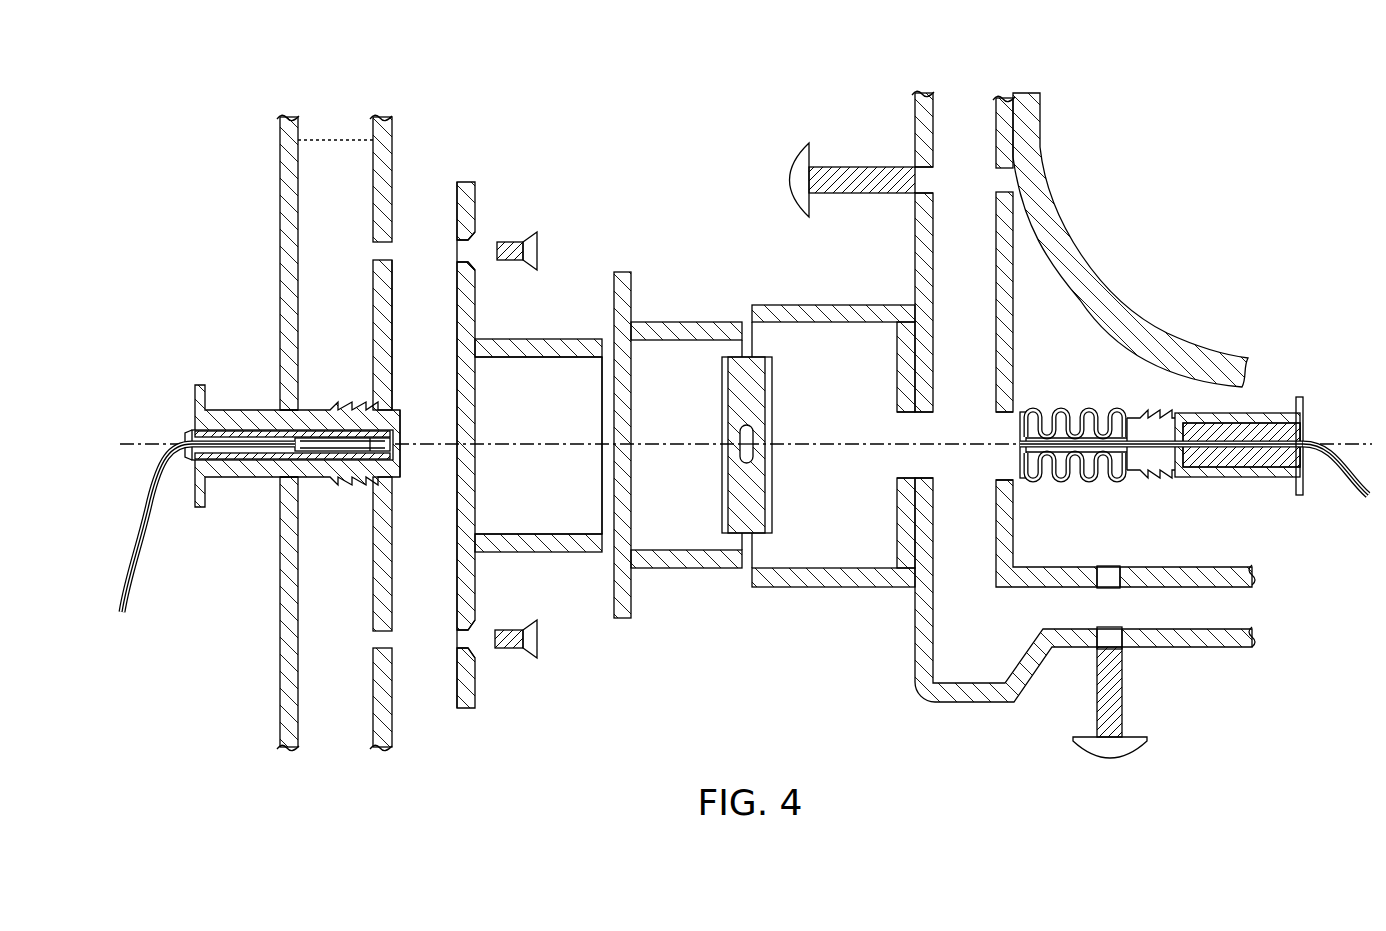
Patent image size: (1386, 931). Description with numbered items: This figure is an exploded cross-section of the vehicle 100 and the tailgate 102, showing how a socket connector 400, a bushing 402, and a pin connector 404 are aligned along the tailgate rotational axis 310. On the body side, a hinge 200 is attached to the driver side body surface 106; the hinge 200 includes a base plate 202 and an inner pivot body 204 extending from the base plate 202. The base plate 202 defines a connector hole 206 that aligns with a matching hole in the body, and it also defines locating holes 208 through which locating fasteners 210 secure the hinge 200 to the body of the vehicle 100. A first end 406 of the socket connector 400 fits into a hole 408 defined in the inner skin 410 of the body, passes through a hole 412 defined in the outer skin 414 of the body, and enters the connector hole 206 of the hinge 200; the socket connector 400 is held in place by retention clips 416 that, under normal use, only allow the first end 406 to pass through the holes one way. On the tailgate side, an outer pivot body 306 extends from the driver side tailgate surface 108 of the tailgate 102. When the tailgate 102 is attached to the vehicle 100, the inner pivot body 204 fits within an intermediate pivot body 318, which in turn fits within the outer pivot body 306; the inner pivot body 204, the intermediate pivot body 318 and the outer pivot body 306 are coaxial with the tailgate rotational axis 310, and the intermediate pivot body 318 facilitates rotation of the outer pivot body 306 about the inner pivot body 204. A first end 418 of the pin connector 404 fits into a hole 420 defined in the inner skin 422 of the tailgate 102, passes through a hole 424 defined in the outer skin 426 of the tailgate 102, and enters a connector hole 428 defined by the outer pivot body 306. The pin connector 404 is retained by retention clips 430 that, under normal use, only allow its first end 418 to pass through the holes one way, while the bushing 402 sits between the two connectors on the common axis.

The vehicle 100 is at (236, 160).
The tailgate 102 is at (1090, 160).
The driver side body surface 106 is at (394, 151).
The driver side tailgate surface 108 is at (912, 120).
The hinge 200 is at (466, 180).
The base plate 202 is at (458, 312).
The inner pivot body 204 is at (550, 340).
The connector hole 206 is at (478, 425).
The locating holes 208 is at (460, 250).
The locating fasteners 210 is at (540, 236).
The outer pivot body 306 is at (810, 305).
The tailgate rotational axis 310 is at (148, 440).
The intermediate pivot body 318 is at (655, 322).
The socket connector 400 is at (197, 394).
The bushing 402 is at (773, 362).
The pin connector 404 is at (1303, 500).
The first end of the socket connector 406 is at (401, 415).
The hole in the inner skin of the body 408 is at (277, 485).
The inner skin of the body 410 is at (299, 320).
The hole in the outer skin of the body 412 is at (401, 480).
The outer skin of the body 414 is at (393, 372).
The retention clips 416 is at (338, 410).
The first end of the pin connector 418 is at (1025, 425).
The hole in the inner skin of the tailgate 420 is at (1003, 430).
The inner skin of the tailgate 422 is at (996, 262).
The hole in the outer skin of the tailgate 424 is at (923, 420).
The outer skin of the tailgate 426 is at (934, 228).
The connector hole of the outer pivot body 428 is at (900, 428).
The retention clips 430 is at (1160, 480).